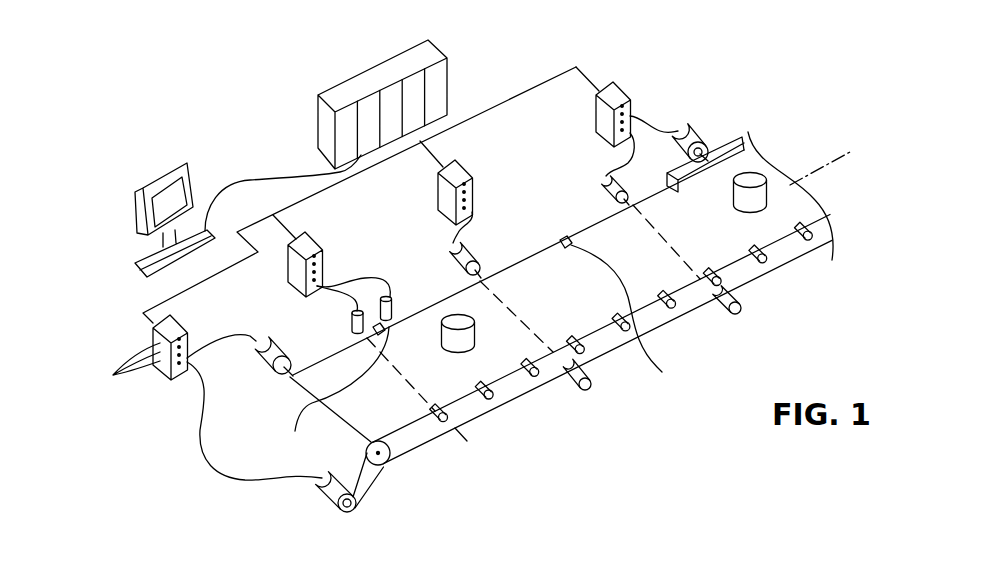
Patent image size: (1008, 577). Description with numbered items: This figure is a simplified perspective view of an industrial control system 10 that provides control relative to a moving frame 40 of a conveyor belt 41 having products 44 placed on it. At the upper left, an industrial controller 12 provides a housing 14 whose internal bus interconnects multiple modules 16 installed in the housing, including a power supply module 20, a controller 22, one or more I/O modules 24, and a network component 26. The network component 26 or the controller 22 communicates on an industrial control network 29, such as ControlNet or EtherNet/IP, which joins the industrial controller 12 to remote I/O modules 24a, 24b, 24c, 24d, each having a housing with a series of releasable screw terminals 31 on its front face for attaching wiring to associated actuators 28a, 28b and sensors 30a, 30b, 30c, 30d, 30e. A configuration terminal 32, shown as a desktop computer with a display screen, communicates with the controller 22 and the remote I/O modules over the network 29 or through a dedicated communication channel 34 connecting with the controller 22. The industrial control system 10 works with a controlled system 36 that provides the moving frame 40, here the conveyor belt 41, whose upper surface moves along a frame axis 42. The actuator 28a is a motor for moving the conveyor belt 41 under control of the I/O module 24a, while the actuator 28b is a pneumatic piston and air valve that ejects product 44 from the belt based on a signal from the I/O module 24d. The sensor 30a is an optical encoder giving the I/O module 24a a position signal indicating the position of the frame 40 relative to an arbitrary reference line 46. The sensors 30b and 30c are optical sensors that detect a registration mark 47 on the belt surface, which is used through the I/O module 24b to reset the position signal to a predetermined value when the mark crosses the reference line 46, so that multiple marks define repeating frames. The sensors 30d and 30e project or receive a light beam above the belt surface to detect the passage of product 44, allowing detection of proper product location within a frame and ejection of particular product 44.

The industrial control system 10 is at (669, 47).
The industrial controller 12 is at (278, 78).
The housing 14 is at (444, 56).
The modules 16 is at (415, 88).
The power supply module 20 is at (340, 141).
The controller 22 is at (362, 115).
The I/O modules 24 is at (412, 90).
The network component 26 is at (446, 92).
The industrial control network 29 is at (557, 74).
The configuration terminal 32 is at (141, 190).
The dedicated communication channel 34 is at (243, 180).
The remote I/O module 24a is at (170, 380).
The remote I/O module 24b is at (289, 284).
The remote I/O module 24c is at (437, 205).
The remote I/O module 24d is at (592, 140).
The releasable screw terminals 31 is at (126, 369).
The sensor 30a is at (270, 372).
The sensor 30b is at (350, 322).
The sensor 30c is at (392, 302).
The sensor 30d is at (477, 263).
The sensor 30e is at (601, 188).
The actuator 28a is at (322, 487).
The actuator 28b is at (692, 127).
The controlled system 36 is at (812, 119).
The moving frame 40 is at (452, 384).
The conveyor belt 41 is at (676, 282).
The frame axis 42 is at (813, 174).
The product 44 is at (475, 338).
The reference line 46 is at (467, 442).
The registration mark 47 is at (486, 350).